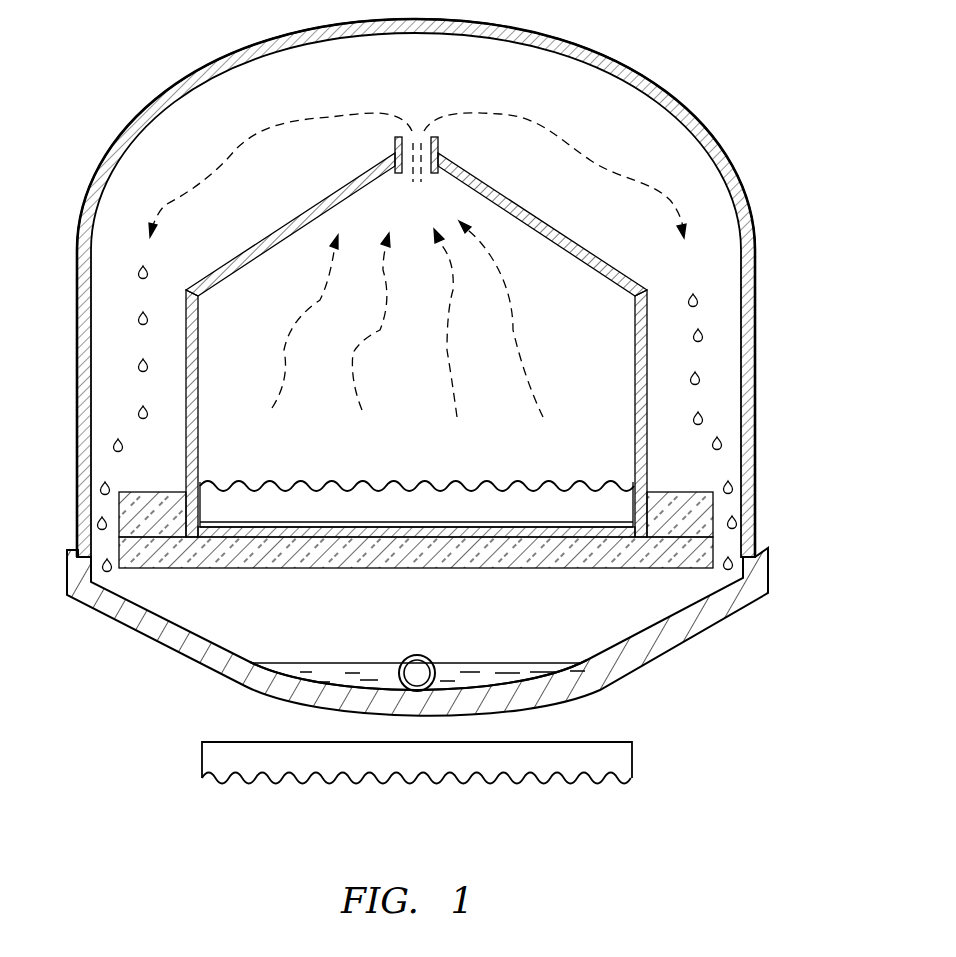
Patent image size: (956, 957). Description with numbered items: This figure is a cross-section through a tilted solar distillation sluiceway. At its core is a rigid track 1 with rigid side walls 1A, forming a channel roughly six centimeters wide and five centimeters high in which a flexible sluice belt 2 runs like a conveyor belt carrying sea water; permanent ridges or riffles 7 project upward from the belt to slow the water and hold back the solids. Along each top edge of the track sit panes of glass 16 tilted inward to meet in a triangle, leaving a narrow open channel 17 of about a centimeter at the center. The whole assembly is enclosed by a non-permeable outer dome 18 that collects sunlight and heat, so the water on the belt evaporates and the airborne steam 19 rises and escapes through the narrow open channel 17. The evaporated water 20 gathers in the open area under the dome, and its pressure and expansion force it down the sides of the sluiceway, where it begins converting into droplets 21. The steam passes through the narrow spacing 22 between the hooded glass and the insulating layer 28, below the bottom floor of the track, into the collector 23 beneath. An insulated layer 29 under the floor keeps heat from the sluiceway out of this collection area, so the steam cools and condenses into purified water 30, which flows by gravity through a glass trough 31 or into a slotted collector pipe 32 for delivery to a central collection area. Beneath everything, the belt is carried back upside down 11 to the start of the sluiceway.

The rigid track 1 is at (293, 535).
The rigid side walls 1A is at (650, 345).
The flexible sluice belt 2 is at (513, 510).
The ridges or riffles 7 is at (273, 478).
The belt carried upside down 11 is at (330, 765).
The panes of glass 16 is at (296, 222).
The narrow open channel 17 is at (419, 138).
The outer dome 18 is at (632, 70).
The airborne steam 19 is at (447, 352).
The evaporated water 20 is at (236, 163).
The droplets 21 is at (140, 365).
The spacing 22 is at (728, 508).
The collector 23 is at (607, 607).
The insulating layer 28 is at (680, 497).
The insulated layer 29 is at (433, 562).
The purified water 30 is at (338, 677).
The trough 31 is at (505, 697).
The slotted collector pipe 32 is at (418, 683).